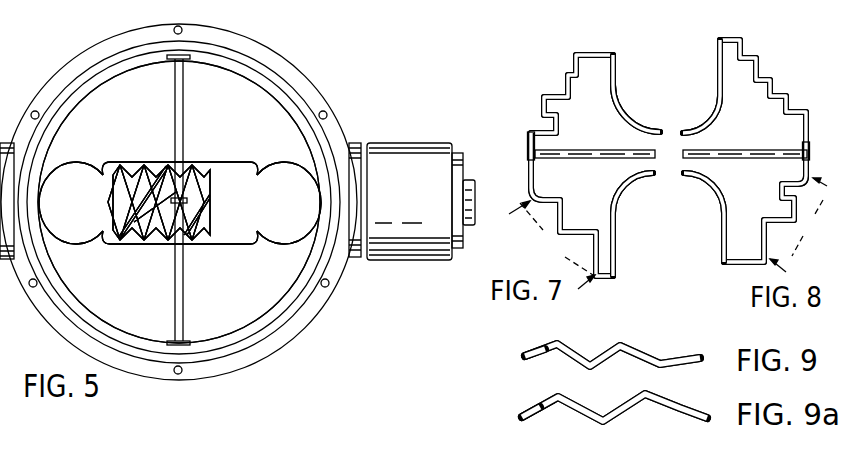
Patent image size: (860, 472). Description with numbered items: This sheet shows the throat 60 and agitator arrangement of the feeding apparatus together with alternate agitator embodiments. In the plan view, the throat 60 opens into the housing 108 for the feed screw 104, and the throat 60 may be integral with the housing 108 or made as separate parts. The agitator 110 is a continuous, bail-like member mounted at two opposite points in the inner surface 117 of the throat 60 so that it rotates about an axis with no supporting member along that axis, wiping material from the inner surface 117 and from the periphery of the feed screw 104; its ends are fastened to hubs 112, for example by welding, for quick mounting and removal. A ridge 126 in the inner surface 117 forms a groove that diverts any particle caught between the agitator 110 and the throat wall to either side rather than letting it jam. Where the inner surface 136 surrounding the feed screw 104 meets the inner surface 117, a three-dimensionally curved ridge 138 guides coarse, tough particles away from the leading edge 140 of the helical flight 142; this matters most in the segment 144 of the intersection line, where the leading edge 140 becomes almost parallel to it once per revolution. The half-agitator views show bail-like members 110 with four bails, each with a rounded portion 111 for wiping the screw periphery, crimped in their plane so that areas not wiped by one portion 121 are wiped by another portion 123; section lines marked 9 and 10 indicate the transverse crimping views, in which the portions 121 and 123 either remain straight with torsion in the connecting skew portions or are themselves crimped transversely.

In FIG. 5, the throat 60 is at (308, 78).
In FIG. 5, the feed screw 104 is at (212, 190).
In FIG. 5, the housing 108 is at (400, 137).
In FIG. 5, the agitator 110 is at (184, 94).
In FIG. 7, the agitator 110 is at (527, 192).
In FIG. 8, the agitator 110 is at (763, 151).
In FIG. 9, the agitator 110 is at (522, 353).
In FIG. 9A, the agitator 110 is at (519, 418).
In FIG. 7, the rounded portion 111 is at (623, 104).
In FIG. 8, the rounded portion 111 is at (718, 204).
In FIG. 7, the hub 112 is at (527, 147).
In FIG. 5, the inner surface 117 is at (243, 309).
In FIG. 7, the portion 121 is at (571, 92).
In FIG. 8, the portion 121 is at (757, 88).
In FIG. 9, the portion 121 is at (573, 360).
In FIG. 9A, the portion 121 is at (572, 411).
In FIG. 7, the portion 123 is at (573, 54).
In FIG. 8, the portion 123 is at (739, 37).
In FIG. 9, the portion 123 is at (535, 359).
In FIG. 9A, the portion 123 is at (528, 423).
In FIG. 5, the ridge 126 is at (272, 107).
In FIG. 5, the inner surface 136 is at (107, 242).
In FIG. 5, the ridge 138 is at (131, 161).
In FIG. 5, the leading edge 140 is at (206, 243).
In FIG. 5, the helical flight 142 is at (168, 243).
In FIG. 5, the segment 144 is at (300, 245).
In FIG. 7, the section line 9— 9 is at (545, 255).
In FIG. 8, the section line 10- 10 is at (801, 214).